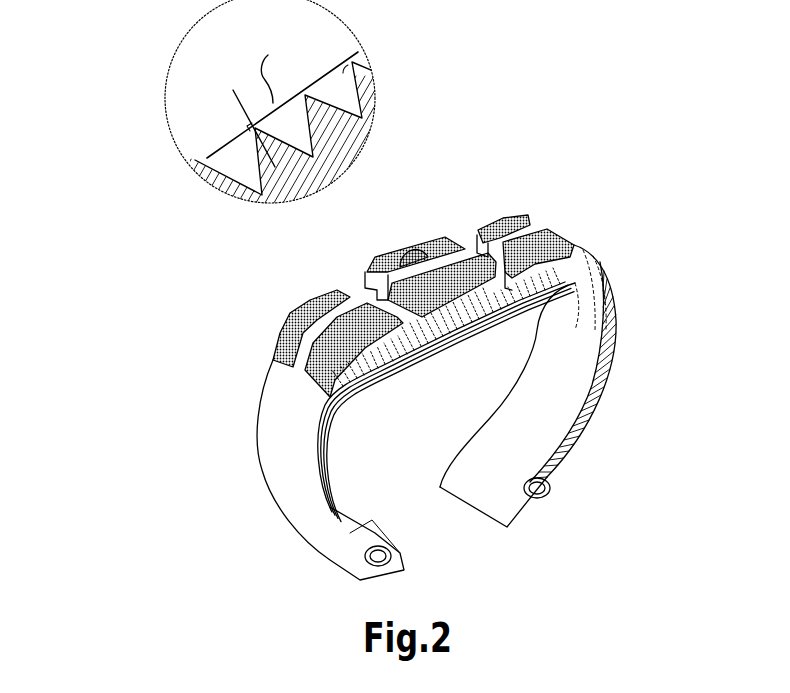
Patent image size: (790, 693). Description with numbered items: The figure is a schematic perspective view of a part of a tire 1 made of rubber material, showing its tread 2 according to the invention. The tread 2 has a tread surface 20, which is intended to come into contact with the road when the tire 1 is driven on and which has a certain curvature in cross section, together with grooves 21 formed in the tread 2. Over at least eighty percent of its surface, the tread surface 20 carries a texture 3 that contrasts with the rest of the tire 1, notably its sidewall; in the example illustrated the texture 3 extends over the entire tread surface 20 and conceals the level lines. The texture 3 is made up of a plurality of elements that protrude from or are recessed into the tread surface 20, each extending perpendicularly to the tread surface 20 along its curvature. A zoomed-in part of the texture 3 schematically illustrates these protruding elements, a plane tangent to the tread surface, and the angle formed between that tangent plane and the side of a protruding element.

The tire 1 is at (240, 339).
The tread 2 is at (515, 193).
The texture 3 is at (467, 265).
The tread surface 20 is at (558, 255).
The grooves 21 is at (303, 360).